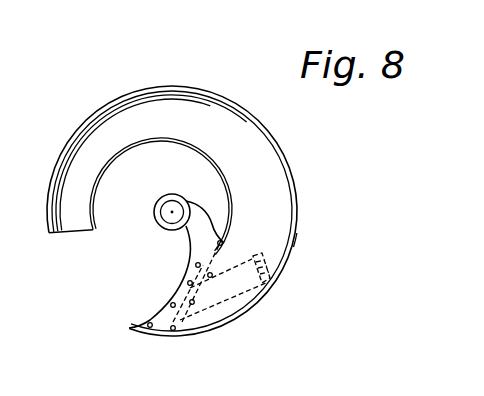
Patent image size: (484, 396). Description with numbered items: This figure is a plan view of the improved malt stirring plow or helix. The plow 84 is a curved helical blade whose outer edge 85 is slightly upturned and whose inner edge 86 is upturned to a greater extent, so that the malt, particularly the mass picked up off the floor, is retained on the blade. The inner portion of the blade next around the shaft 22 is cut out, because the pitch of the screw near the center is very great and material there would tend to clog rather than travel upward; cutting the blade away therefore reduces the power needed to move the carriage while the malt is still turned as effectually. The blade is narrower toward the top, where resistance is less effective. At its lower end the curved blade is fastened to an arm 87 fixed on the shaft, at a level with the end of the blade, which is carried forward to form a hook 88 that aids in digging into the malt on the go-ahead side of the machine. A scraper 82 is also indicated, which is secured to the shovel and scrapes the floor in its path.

The hub shaft 22 is at (165, 214).
The scraper 82 is at (262, 292).
The stirring plow 84 is at (282, 174).
The outer edge 85 is at (292, 229).
The inner edge 86 is at (212, 158).
The arm 87 is at (193, 229).
The hook 88 is at (129, 328).